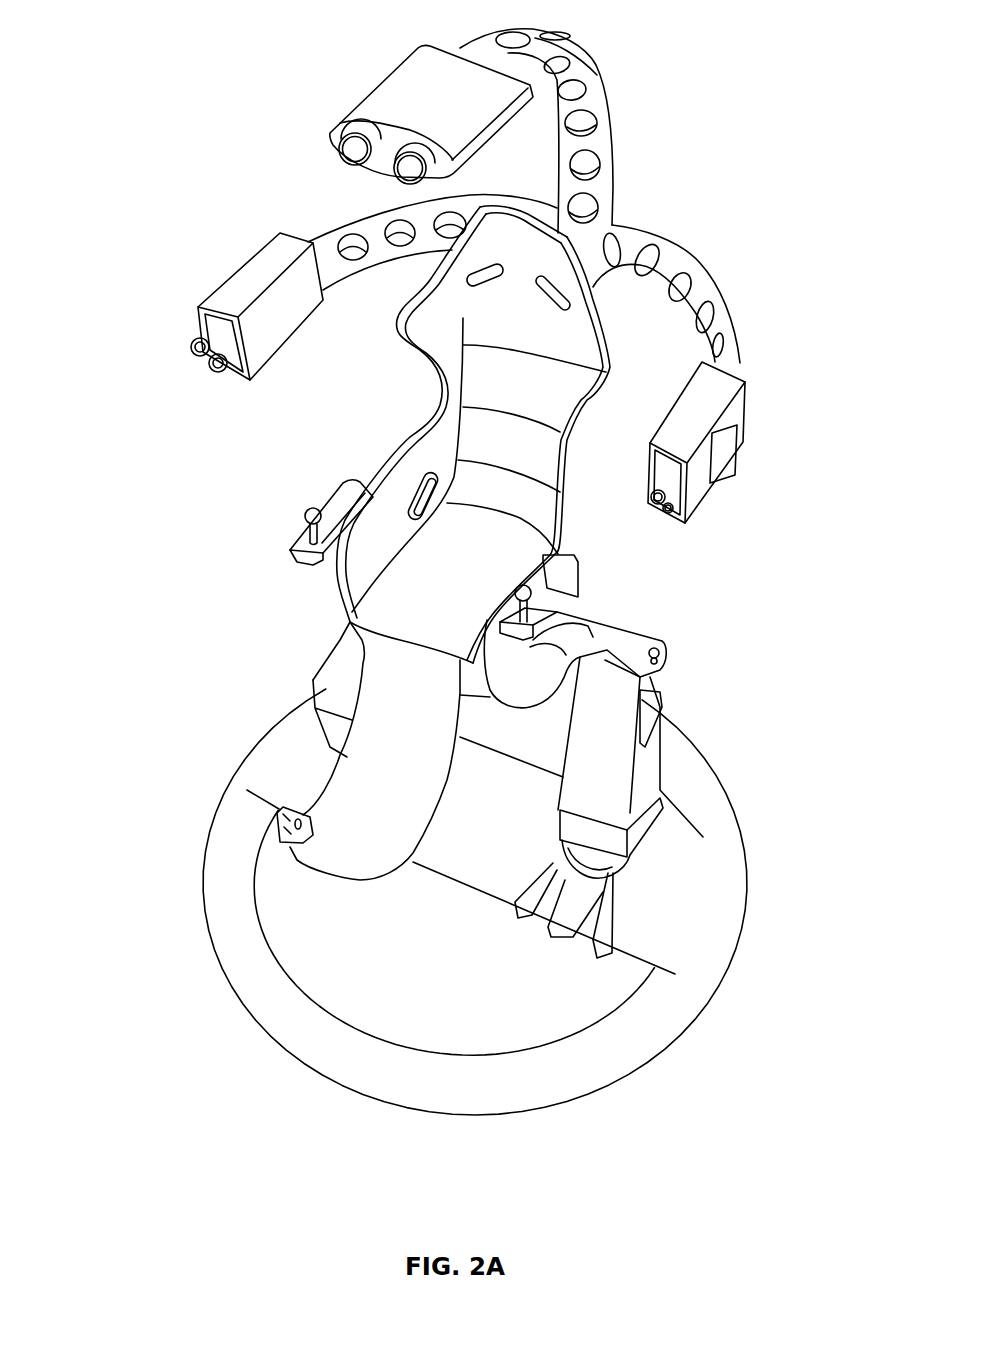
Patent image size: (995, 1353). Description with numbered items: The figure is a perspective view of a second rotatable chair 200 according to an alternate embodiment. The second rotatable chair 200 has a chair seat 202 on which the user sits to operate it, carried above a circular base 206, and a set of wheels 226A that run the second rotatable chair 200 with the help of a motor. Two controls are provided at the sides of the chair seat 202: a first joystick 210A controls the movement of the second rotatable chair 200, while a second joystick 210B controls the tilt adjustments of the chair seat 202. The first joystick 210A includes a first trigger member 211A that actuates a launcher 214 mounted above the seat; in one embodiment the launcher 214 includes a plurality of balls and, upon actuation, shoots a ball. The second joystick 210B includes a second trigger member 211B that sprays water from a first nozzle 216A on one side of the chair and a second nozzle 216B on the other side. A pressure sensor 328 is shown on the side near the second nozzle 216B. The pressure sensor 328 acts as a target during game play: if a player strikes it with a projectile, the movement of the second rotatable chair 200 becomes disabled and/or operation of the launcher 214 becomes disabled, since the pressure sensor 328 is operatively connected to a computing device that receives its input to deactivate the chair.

The second rotatable chair 200 is at (259, 1150).
The chair seat 202 is at (410, 436).
The circular base 206 is at (217, 957).
The first joystick 210A is at (303, 538).
The second joystick 210B is at (537, 605).
The first trigger member 211A is at (307, 514).
The second trigger member 211B is at (528, 588).
The launcher 214 is at (339, 162).
The first nozzle 216A is at (192, 344).
The second nozzle 216B is at (746, 442).
The set of wheels 226A is at (273, 827).
The pressure sensor 328 is at (732, 453).